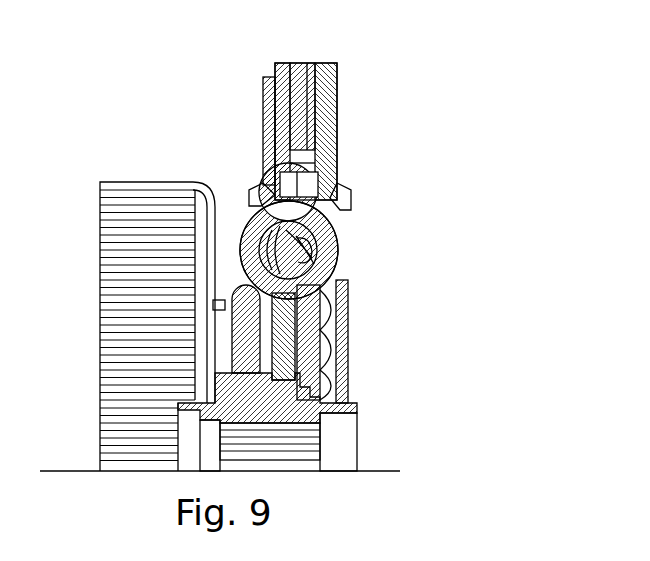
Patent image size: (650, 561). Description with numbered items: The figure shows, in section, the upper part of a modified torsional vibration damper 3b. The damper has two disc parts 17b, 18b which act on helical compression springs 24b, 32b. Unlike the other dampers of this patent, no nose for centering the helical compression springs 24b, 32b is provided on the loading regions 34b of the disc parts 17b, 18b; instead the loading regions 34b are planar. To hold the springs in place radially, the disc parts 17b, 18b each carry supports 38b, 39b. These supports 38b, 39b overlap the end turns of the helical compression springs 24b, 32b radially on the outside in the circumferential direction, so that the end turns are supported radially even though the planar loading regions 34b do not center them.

The torsional vibration damper 3b is at (470, 122).
The disc part 17b is at (232, 338).
The disc part 18b is at (333, 333).
The helical compression spring 24b is at (330, 258).
The helical compression spring 32b is at (336, 368).
The loading region 34b is at (300, 248).
The support 38b is at (265, 183).
The support 39b is at (337, 178).